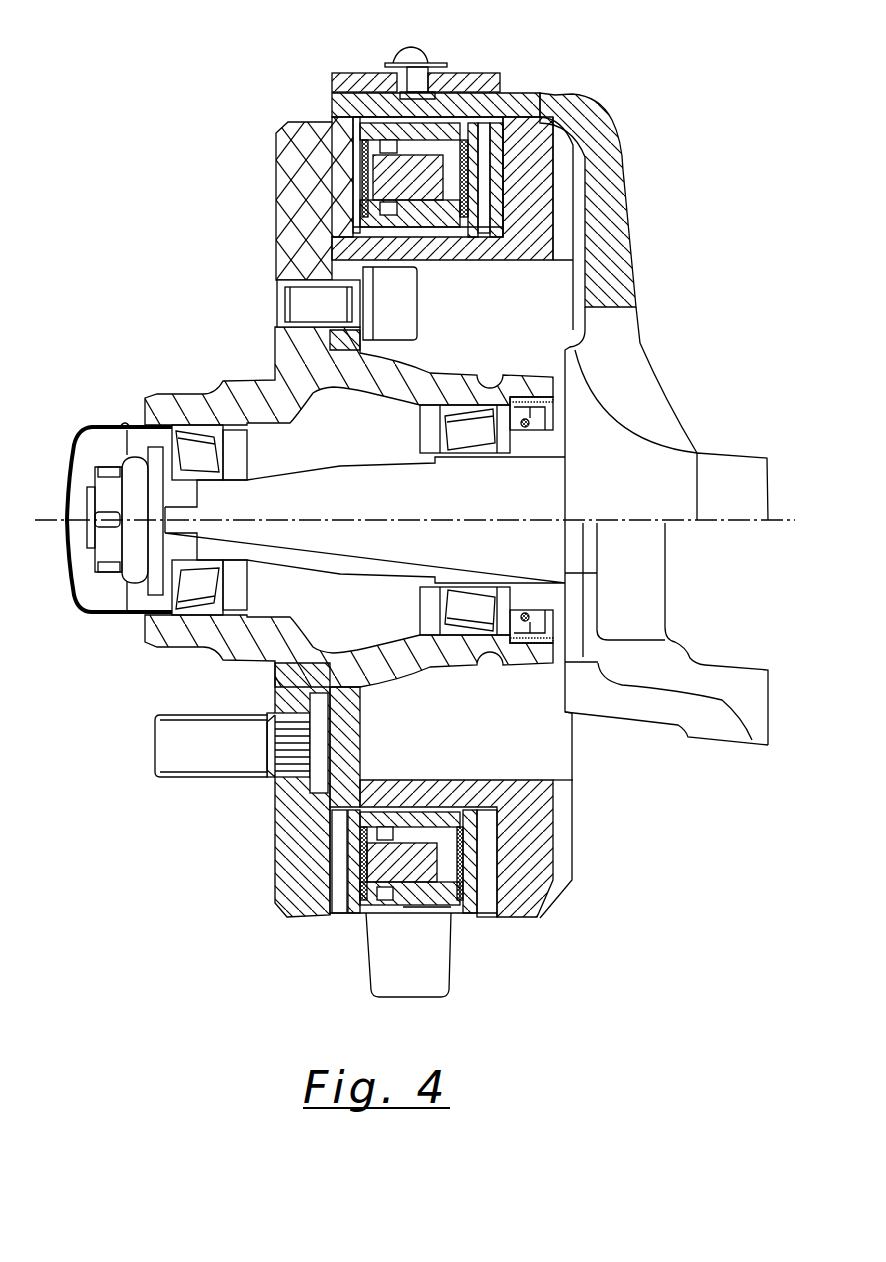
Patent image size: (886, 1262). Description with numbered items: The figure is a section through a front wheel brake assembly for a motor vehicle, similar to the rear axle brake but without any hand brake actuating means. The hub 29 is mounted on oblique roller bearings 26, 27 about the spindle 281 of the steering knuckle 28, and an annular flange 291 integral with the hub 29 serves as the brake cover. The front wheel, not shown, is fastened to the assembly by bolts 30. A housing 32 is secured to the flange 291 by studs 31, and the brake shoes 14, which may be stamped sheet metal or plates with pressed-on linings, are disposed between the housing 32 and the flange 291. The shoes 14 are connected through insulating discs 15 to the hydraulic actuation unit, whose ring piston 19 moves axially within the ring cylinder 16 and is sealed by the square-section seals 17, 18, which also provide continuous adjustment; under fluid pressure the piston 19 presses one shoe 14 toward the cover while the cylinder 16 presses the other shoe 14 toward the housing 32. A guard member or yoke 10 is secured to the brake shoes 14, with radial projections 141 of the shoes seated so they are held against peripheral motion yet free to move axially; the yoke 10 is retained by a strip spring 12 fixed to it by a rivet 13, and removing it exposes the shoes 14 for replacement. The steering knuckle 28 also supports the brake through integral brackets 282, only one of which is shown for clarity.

The guard member 10 is at (347, 77).
The strip spring 12 is at (393, 63).
The rivet 13 is at (413, 73).
The brake shoes 14 is at (457, 813).
The radial projections 141 is at (363, 107).
The insulating discs 15 is at (385, 156).
The ring cylinder 16 is at (430, 890).
The seal 17 is at (440, 210).
The seal 18 is at (355, 146).
The ring piston 19 is at (400, 184).
The oblique roller bearing 26 is at (147, 618).
The oblique roller bearing 27 is at (463, 433).
The steering knuckle 28 is at (617, 480).
The spindle 281 is at (365, 540).
The integral bracket 282 is at (550, 103).
The hub 29 is at (260, 403).
The annular flange 291 is at (300, 848).
The bolts 30 is at (202, 743).
The studs 31 is at (390, 300).
The housing 32 is at (527, 228).